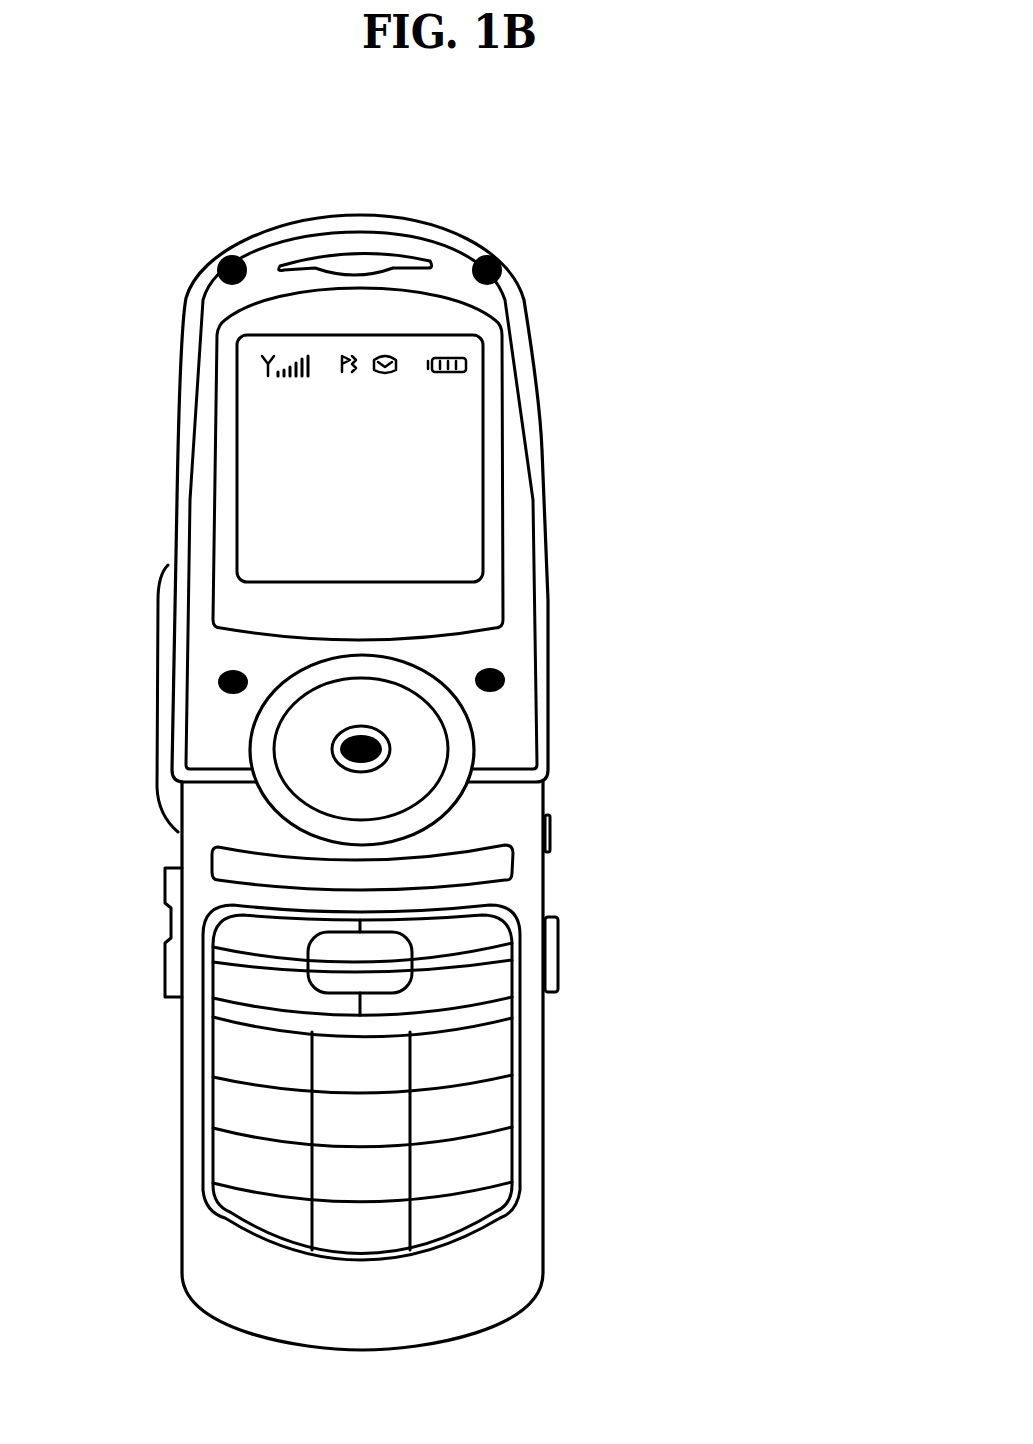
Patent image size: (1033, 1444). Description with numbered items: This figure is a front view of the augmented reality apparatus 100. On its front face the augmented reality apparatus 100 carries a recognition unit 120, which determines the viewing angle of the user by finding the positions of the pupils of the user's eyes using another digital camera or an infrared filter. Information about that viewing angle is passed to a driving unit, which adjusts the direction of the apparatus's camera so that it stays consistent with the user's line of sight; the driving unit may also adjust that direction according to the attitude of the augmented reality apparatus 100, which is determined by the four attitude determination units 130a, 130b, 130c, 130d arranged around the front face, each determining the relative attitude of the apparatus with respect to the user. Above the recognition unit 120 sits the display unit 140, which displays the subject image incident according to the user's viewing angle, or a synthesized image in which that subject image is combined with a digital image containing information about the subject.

The augmented reality apparatus 100 is at (686, 97).
The recognition unit 120 is at (378, 730).
The attitude determination unit 130a is at (225, 258).
The attitude determination unit 130b is at (222, 672).
The attitude determination unit 130c is at (497, 262).
The attitude determination unit 130d is at (498, 670).
The display unit 140 is at (482, 455).